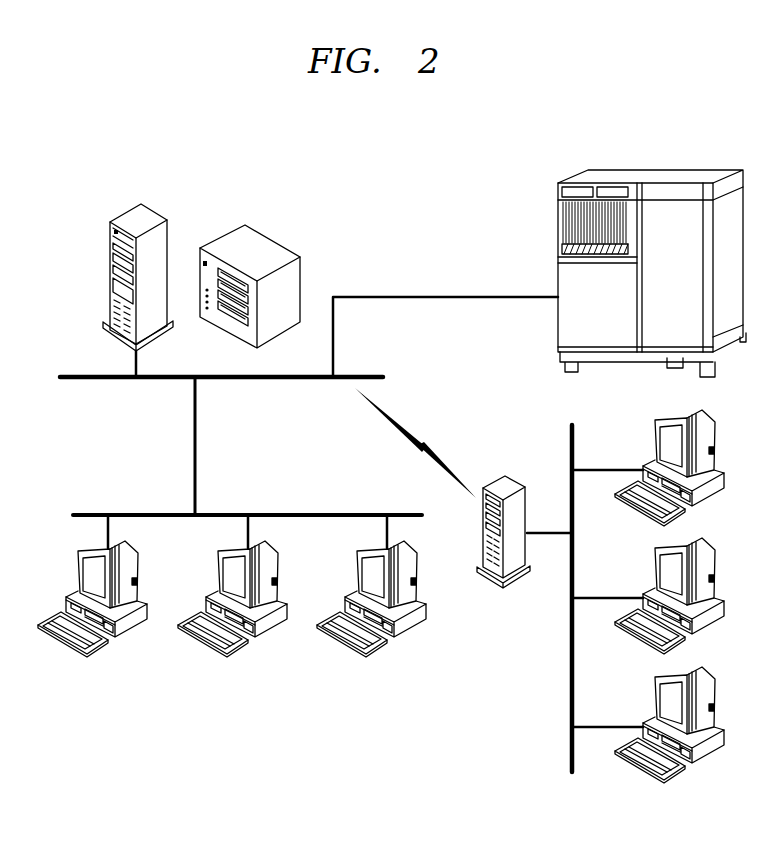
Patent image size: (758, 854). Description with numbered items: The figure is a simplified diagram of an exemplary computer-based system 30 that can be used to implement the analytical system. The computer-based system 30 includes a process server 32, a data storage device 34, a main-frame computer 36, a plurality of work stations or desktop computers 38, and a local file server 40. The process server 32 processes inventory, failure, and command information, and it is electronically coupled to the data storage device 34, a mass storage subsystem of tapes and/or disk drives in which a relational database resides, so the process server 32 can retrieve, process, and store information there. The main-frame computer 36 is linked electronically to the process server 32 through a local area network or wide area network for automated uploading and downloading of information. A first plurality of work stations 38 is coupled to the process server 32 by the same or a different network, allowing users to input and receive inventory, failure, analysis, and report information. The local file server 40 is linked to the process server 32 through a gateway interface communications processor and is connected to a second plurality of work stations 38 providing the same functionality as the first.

The computer-based system 30 is at (318, 196).
The process server 32 is at (127, 218).
The data storage device 34 is at (228, 243).
The main-frame computer 36 is at (658, 176).
The work station 38 is at (76, 592).
The local file server 40 is at (513, 486).